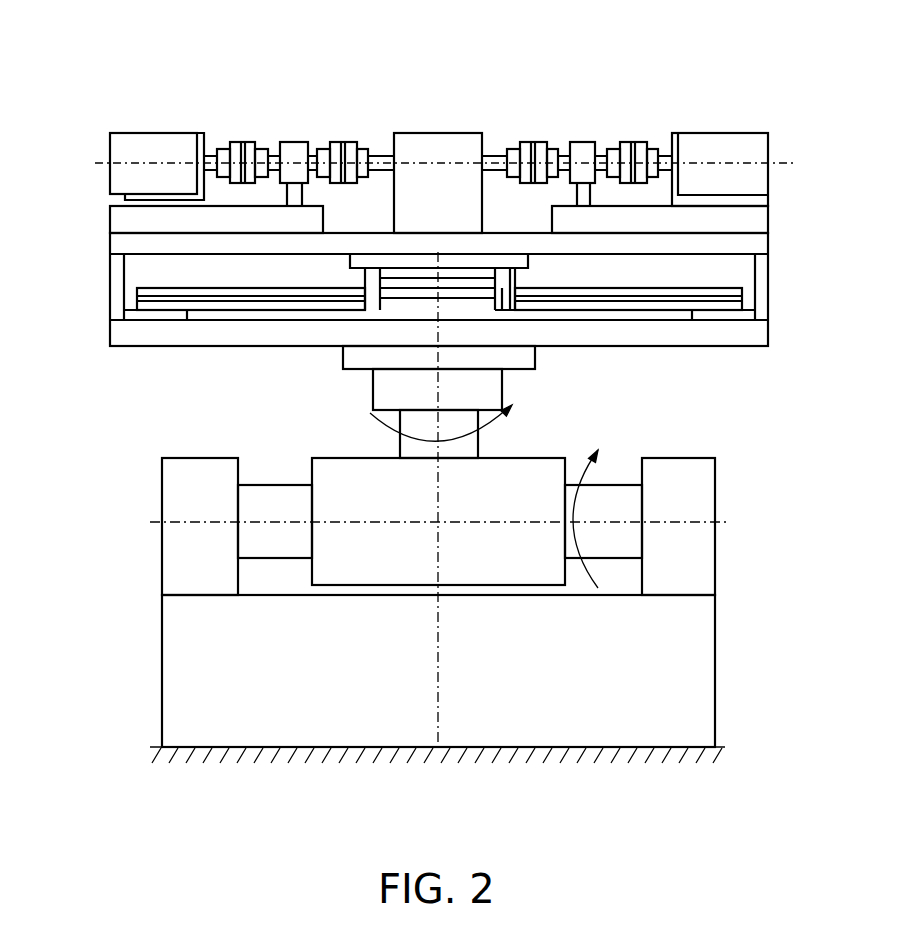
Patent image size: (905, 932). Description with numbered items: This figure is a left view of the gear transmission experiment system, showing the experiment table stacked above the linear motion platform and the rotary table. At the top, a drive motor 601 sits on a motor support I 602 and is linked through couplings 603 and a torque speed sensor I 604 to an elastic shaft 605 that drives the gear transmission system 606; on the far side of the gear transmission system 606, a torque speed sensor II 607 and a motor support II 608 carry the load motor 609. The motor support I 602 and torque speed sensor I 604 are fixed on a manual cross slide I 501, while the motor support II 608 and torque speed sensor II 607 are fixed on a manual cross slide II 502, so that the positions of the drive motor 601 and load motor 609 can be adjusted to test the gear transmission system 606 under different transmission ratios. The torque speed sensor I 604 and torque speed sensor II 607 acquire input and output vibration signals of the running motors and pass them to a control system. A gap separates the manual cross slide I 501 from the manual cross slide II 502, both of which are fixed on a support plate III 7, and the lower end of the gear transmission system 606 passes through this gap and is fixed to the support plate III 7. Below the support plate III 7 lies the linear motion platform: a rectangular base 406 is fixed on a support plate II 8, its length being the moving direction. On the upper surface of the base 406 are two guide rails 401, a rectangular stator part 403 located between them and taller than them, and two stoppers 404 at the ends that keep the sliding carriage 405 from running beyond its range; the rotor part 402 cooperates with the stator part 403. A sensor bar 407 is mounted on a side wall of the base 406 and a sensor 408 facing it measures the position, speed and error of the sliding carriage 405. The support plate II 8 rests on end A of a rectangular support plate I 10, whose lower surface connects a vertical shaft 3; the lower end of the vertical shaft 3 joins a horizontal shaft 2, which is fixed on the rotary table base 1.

The rotary table base 1 is at (173, 656).
The horizontal shaft 2 is at (258, 556).
The vertical shaft 3 is at (400, 440).
The support plate III 7 is at (773, 240).
The support plate II 8 is at (520, 312).
The support plate I 10 is at (520, 362).
The guide rail 401 is at (432, 302).
The rotor part 402 is at (432, 291).
The stator part 403 is at (140, 291).
The stopper 404 is at (120, 267).
The sliding carriage 405 is at (520, 272).
The base 406 is at (742, 316).
The sensor bar 407 is at (545, 285).
The sensor 408 is at (530, 300).
The manual cross slide I 501 is at (113, 213).
The manual cross slide II 502 is at (768, 208).
The drive motor 601 is at (117, 134).
The motor support I 602 is at (197, 134).
The coupling 603 is at (238, 140).
The torque speed sensor I 604 is at (298, 140).
The elastic shaft 605 is at (388, 152).
The gear transmission system 606 is at (460, 135).
The torque speed sensor II 607 is at (577, 140).
The motor support II 608 is at (673, 134).
The load motor 609 is at (767, 134).